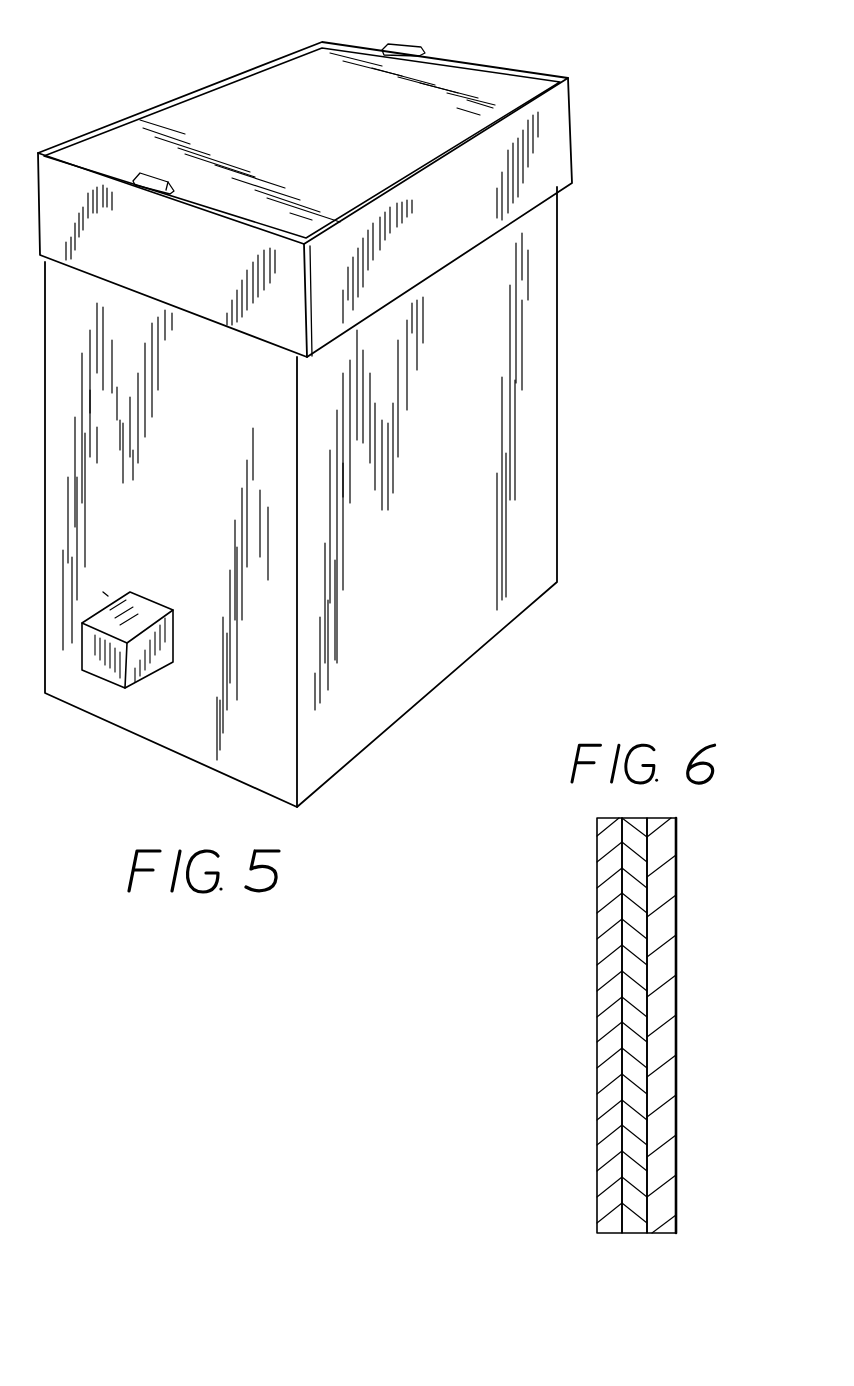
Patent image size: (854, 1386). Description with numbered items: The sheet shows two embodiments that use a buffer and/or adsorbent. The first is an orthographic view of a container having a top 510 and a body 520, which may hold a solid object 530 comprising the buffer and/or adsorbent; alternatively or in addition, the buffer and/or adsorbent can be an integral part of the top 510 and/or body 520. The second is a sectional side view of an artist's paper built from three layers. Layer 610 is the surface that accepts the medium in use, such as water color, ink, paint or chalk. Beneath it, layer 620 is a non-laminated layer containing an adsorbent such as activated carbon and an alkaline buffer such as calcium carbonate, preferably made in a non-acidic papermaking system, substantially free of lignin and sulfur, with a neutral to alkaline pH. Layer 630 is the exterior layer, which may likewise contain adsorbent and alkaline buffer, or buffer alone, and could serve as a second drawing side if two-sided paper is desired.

In FIG. 5, the top 510 is at (210, 120).
In FIG. 5, the body 520 is at (520, 528).
In FIG. 5, the solid object 530 is at (138, 688).
In FIG. 6, the layer 610 is at (610, 1225).
In FIG. 6, the non-laminated layer 620 is at (632, 1225).
In FIG. 6, the exterior layer 630 is at (660, 1225).